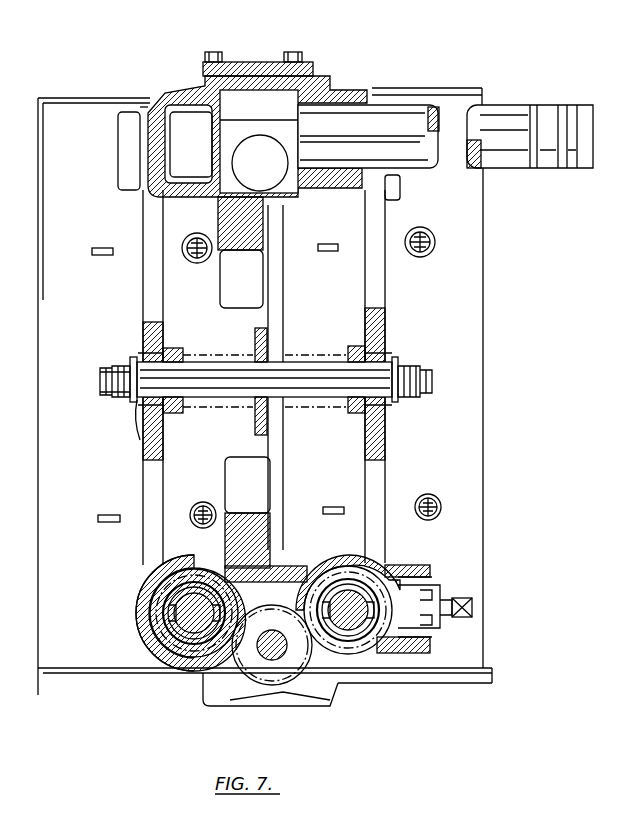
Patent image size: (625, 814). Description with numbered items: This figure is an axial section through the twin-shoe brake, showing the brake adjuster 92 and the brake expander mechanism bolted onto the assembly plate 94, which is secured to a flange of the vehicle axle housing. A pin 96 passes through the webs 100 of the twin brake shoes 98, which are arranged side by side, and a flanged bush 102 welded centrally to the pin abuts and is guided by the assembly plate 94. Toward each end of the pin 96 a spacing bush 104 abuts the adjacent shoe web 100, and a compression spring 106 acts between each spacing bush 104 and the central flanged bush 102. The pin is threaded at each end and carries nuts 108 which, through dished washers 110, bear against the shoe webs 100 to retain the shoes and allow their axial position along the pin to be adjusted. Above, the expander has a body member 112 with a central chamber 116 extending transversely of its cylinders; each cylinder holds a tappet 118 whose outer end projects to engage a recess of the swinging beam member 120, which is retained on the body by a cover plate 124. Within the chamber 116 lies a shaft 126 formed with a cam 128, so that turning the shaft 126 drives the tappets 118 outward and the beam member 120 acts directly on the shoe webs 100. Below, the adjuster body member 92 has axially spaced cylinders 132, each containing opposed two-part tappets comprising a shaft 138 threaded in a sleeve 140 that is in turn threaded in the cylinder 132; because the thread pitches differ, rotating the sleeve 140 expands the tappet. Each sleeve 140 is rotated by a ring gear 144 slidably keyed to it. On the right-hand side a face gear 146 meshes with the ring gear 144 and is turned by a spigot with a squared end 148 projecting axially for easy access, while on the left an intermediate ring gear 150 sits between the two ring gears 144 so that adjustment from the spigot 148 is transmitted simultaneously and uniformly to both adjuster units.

The brake adjuster 92 is at (147, 588).
The assembly plate 94 is at (275, 482).
The pin 96 is at (142, 440).
The brake shoes 98 is at (50, 236).
The shoe webs 100 is at (148, 295).
The flanged bush 102 is at (257, 335).
The spacing bush 104 is at (138, 353).
The compression spring 106 is at (208, 353).
The nuts 108 is at (127, 407).
The dished washers 110 is at (133, 420).
The body member 112 is at (158, 98).
The central chamber 116 is at (278, 207).
The tappet 118 is at (276, 174).
The swinging beam member 120 is at (128, 148).
The cover plate 124 is at (208, 62).
The shaft 126 is at (423, 147).
The cam 128 is at (247, 103).
The cylinders 132 is at (142, 645).
The shaft 138 is at (197, 627).
The sleeve 140 is at (185, 642).
The ring gear 144 is at (210, 653).
The face gear 146 is at (418, 610).
The squared end spigot 148 is at (473, 602).
The intermediate ring gear 150 is at (293, 698).